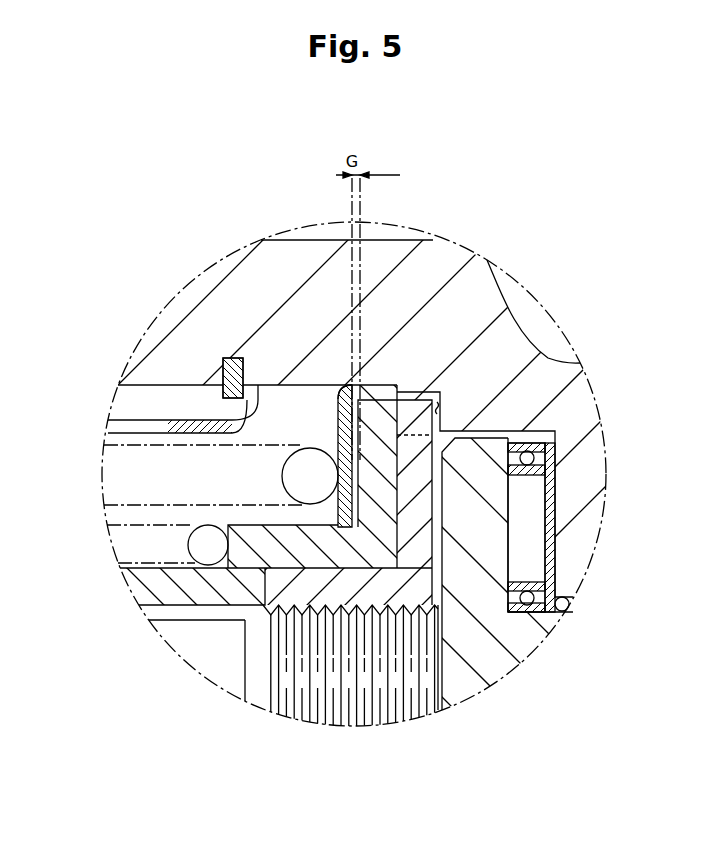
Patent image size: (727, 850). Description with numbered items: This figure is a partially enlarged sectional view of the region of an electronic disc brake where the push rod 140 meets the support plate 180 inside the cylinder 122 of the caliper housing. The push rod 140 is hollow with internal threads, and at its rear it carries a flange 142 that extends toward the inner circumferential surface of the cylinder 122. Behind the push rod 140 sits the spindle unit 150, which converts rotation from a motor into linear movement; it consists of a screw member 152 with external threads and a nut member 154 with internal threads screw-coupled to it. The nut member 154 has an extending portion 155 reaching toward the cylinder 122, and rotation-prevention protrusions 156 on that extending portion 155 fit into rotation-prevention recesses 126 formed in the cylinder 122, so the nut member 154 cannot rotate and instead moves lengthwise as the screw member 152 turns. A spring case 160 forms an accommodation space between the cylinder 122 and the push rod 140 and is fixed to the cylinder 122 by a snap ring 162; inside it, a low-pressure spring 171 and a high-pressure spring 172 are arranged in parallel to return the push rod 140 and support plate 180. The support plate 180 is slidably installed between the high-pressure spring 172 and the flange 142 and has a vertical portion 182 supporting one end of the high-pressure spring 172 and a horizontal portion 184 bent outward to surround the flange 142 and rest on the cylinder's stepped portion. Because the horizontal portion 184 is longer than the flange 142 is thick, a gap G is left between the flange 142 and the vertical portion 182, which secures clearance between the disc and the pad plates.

The cylinder 122 is at (468, 298).
The rotation-prevention recesses 126 is at (441, 417).
The push rod 140 is at (205, 597).
The flange 142 is at (385, 480).
The spindle unit 150 is at (350, 710).
The screw member 152 is at (318, 700).
The nut member 154 is at (362, 592).
The extending portion 155 is at (410, 545).
The rotation-prevention protrusions 156 is at (422, 407).
The spring case 160 is at (203, 433).
The snap ring 162 is at (223, 378).
The low-pressure spring 171 is at (200, 545).
The high-pressure spring 172 is at (283, 477).
The support plate 180 is at (333, 388).
The vertical portion 182 is at (267, 385).
The horizontal portion 184 is at (380, 388).